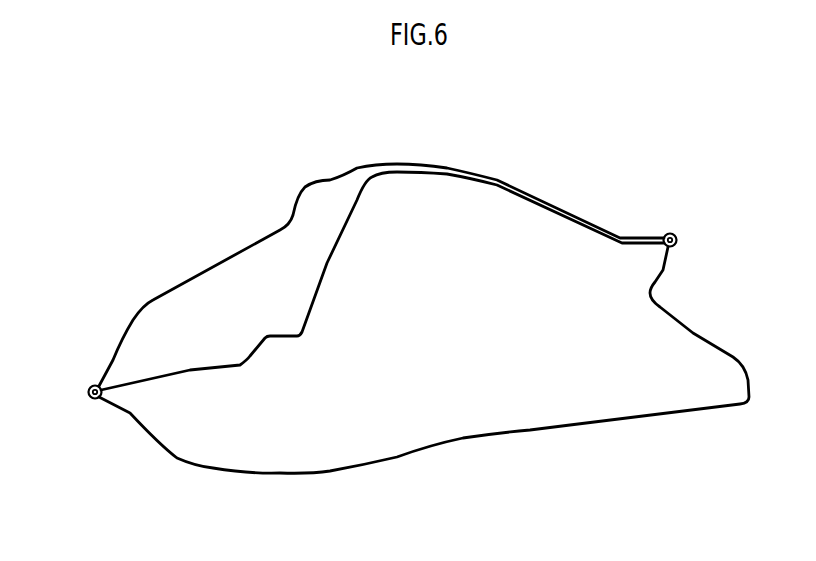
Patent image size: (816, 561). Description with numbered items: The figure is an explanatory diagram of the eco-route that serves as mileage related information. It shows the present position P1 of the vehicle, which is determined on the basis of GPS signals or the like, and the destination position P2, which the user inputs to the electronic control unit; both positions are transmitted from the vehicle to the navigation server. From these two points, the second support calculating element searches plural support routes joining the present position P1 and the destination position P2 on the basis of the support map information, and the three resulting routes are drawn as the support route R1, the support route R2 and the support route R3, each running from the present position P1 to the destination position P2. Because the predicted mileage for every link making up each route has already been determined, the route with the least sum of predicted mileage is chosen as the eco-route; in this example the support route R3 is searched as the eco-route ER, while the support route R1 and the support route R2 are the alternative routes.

The present position P1 is at (88, 381).
The destination position P2 is at (682, 231).
The support route R1 is at (292, 197).
The support route R2 is at (330, 272).
The support route R3 is at (490, 442).